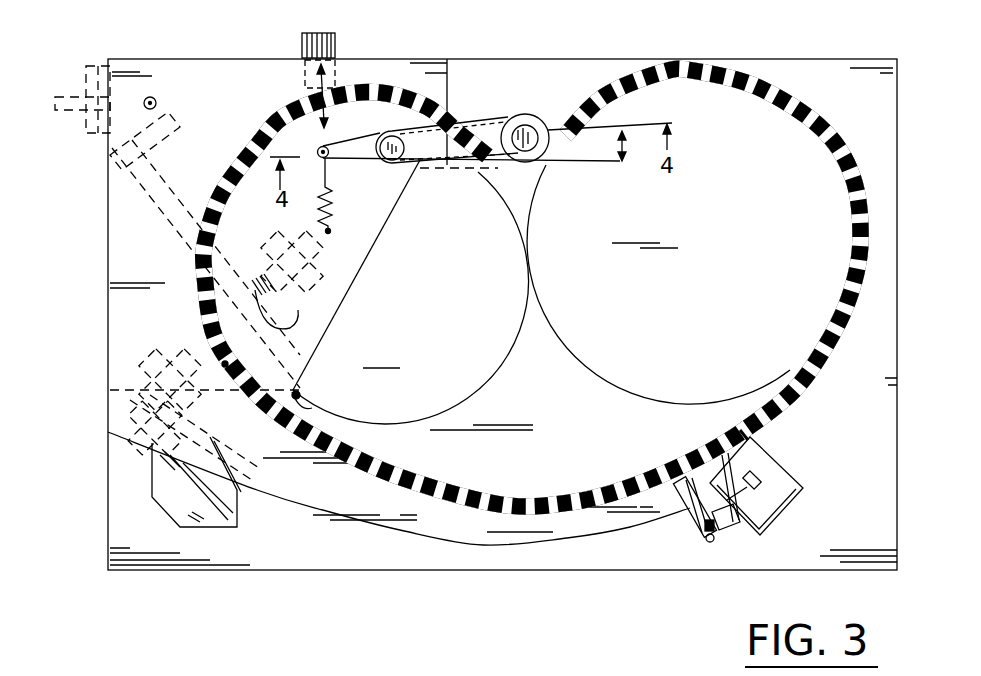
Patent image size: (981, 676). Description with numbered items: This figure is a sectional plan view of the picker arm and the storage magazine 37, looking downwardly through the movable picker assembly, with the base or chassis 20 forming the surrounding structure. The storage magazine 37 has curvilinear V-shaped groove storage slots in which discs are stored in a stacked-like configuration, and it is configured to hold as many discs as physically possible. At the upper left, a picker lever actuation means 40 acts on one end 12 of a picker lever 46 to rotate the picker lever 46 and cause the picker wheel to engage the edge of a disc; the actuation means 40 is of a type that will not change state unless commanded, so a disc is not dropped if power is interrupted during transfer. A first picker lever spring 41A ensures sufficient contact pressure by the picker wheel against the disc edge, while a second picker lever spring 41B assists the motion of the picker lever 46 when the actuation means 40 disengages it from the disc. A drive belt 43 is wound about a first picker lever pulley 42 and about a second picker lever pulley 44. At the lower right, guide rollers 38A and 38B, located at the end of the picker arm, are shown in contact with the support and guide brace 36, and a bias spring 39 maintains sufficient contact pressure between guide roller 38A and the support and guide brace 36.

The one end of the picker lever 12 is at (321, 146).
The base or chassis 20 is at (885, 377).
The support and guide brace 36 is at (788, 504).
The storage magazine 37 is at (838, 113).
The guide roller 38A is at (727, 523).
The guide roller 38B is at (755, 483).
The bias spring 39 is at (690, 528).
The picker lever actuation means 40 is at (320, 32).
The first picker lever spring 41A is at (330, 146).
The second picker lever spring 41B is at (363, 250).
The first picker lever pulley 42 is at (398, 162).
The drive belt 43 is at (498, 117).
The second picker lever pulley 44 is at (543, 98).
The picker lever 46 is at (346, 135).